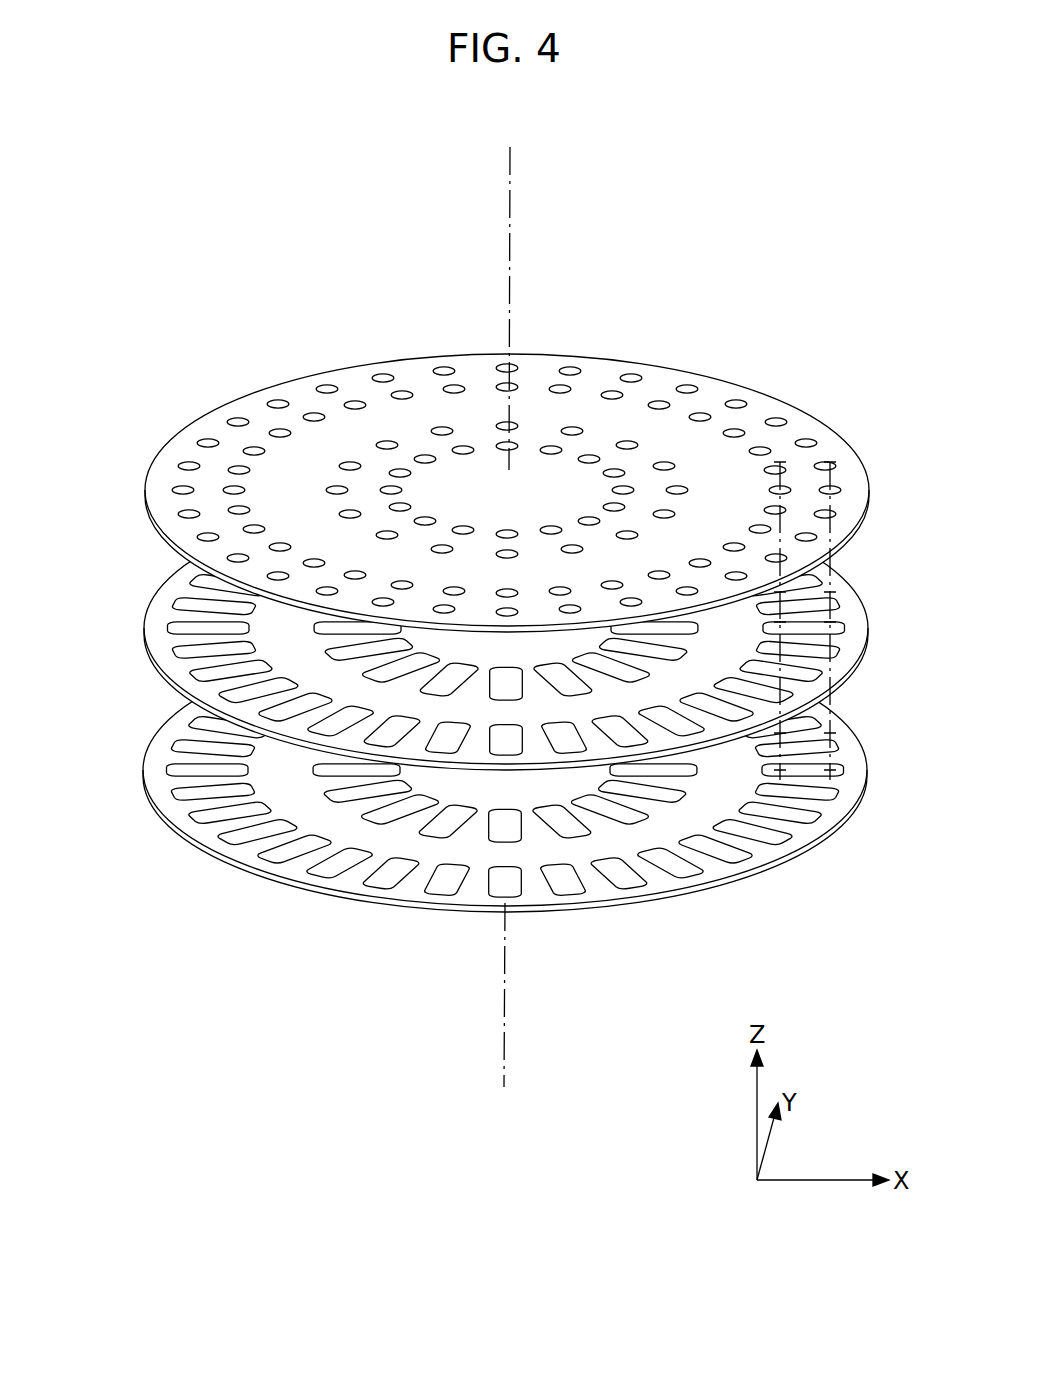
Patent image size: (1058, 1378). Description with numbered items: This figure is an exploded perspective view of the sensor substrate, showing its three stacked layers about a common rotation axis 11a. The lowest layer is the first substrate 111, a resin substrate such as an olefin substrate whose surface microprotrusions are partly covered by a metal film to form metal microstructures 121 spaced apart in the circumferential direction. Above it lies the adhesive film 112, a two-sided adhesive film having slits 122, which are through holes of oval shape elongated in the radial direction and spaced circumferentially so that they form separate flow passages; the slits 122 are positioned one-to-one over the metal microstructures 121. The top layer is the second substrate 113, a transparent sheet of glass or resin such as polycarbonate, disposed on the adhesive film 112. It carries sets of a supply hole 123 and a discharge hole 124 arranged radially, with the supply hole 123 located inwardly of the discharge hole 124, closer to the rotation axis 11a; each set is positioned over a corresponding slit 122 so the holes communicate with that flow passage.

The rotation axis 11a is at (508, 186).
The first substrate 111 is at (145, 771).
The adhesive film 112 is at (146, 630).
The second substrate 113 is at (146, 481).
The metal microstructures 121 is at (818, 764).
The slits 122 is at (842, 630).
The supply hole 123 is at (786, 487).
The discharge hole 124 is at (837, 490).